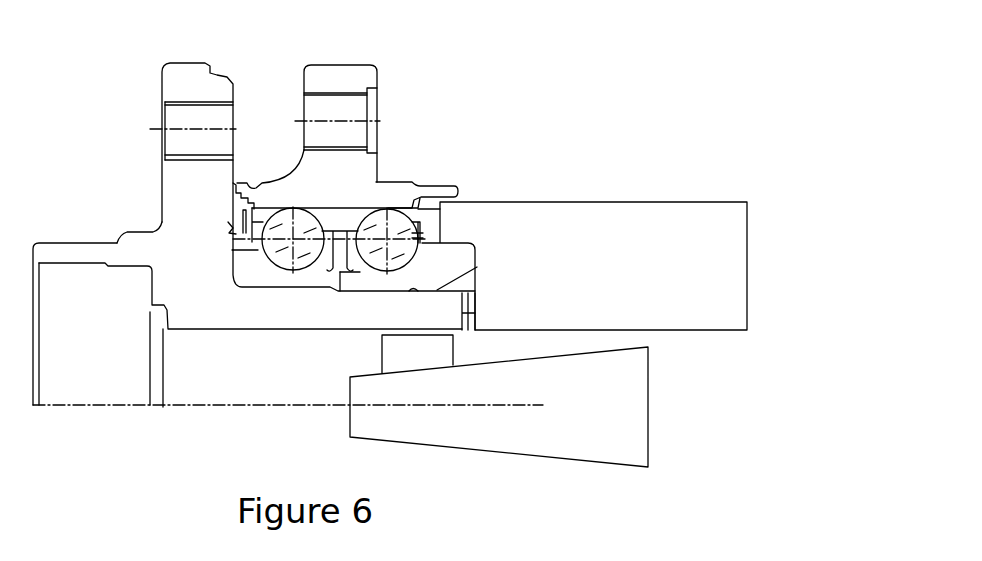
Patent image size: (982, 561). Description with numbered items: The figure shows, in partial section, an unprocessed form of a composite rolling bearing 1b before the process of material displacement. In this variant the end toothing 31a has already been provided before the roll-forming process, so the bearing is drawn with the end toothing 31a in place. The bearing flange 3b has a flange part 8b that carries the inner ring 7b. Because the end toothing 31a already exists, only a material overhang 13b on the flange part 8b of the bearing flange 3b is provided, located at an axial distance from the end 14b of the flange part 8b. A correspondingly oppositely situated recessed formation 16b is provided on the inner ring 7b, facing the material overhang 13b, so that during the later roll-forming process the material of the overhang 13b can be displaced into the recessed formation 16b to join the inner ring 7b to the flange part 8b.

The composite rolling bearing 1b is at (614, 87).
The bearing flange 3b is at (175, 197).
The inner ring 7b is at (443, 251).
The flange part 8b is at (300, 318).
The material overhang 13b is at (416, 329).
The end 14b is at (476, 317).
The recessed formation 16b is at (413, 294).
The end toothing 31a is at (473, 308).